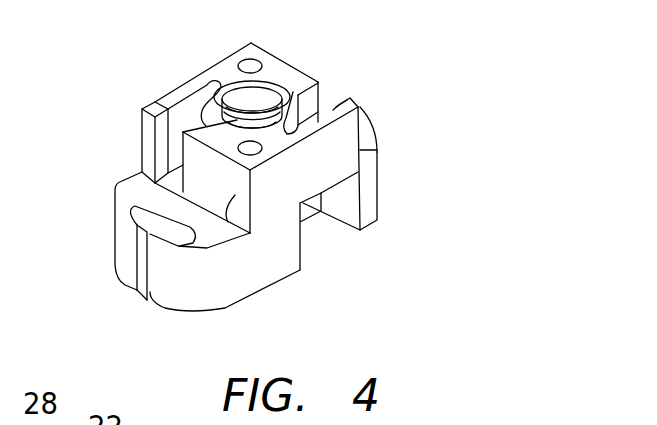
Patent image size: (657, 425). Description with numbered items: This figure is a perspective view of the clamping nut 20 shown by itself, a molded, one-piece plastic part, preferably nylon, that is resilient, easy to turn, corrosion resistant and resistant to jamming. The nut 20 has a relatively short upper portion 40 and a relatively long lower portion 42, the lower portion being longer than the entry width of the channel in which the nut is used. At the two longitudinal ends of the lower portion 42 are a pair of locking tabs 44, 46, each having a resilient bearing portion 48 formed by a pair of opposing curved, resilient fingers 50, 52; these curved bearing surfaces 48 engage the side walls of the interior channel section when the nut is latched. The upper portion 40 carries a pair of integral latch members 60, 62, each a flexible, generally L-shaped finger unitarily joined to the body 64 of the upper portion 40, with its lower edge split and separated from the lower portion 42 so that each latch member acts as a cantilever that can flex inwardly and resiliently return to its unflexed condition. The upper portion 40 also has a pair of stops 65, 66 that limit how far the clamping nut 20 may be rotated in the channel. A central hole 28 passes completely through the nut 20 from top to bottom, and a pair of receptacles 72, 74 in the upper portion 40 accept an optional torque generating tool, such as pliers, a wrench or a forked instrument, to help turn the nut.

The clamping nut 20 is at (364, 81).
The central hole 28 is at (231, 98).
The upper portion 40 is at (345, 135).
The lower portion 42 is at (240, 270).
The locking tab 44 is at (117, 181).
The locking tab 46 is at (378, 152).
The resilient bearing portion 48 is at (130, 250).
The curved resilient finger 50 is at (168, 277).
The curved resilient finger 52 is at (115, 227).
The latch member 60 is at (156, 101).
The latch member 62 is at (345, 105).
The body 64 is at (274, 70).
The stop 65 is at (226, 215).
The stop 66 is at (297, 92).
The receptacle 72 is at (249, 58).
The receptacle 74 is at (263, 144).